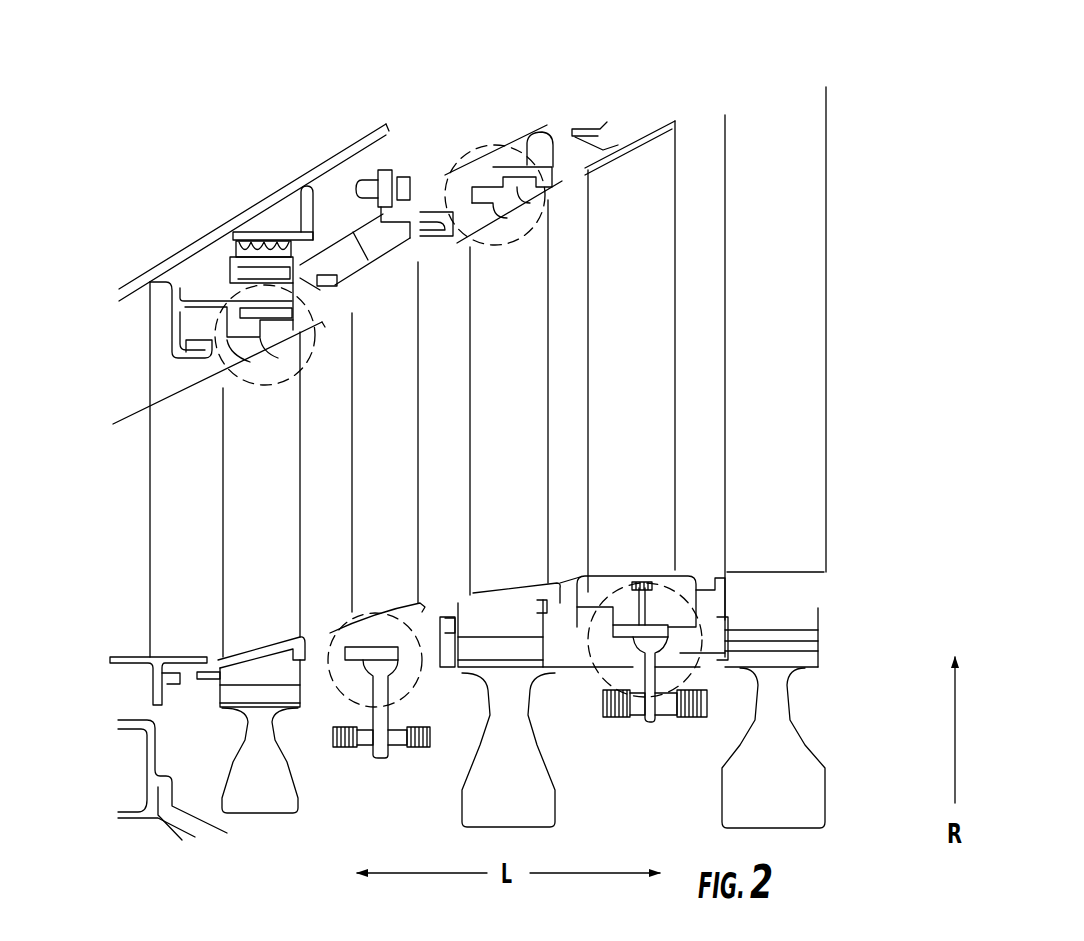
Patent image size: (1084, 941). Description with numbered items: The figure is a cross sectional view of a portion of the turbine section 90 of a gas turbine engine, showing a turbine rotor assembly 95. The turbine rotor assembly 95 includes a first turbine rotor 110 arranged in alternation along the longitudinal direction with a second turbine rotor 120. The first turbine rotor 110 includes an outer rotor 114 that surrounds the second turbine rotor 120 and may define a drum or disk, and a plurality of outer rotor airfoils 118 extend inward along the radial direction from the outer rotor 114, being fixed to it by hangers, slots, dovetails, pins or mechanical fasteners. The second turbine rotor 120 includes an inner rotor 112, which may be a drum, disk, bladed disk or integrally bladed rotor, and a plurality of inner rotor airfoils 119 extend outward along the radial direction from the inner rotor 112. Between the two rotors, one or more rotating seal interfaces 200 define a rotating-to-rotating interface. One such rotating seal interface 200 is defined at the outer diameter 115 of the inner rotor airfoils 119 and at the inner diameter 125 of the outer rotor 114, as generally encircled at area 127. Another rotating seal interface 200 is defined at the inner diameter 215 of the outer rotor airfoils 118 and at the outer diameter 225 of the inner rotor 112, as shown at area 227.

The turbine section 90 is at (620, 49).
The turbine rotor assembly 95 is at (608, 91).
The first turbine rotor 110 is at (498, 116).
The inner rotor 112 is at (562, 675).
The outer rotor 114 is at (202, 298).
The outer diameter of the inner rotor airfoils 115 is at (202, 381).
The outer rotor airfoils 118 is at (393, 463).
The inner rotor airfoils 119 is at (267, 510).
The second turbine rotor 120 is at (853, 491).
The inner diameter of the outer rotor 125 is at (215, 329).
The encircled area 127 is at (296, 290).
The rotating seal interface 200 is at (228, 355).
The inner diameter of the outer rotor airfoils 215 is at (333, 663).
The outer diameter of the inner rotor 225 is at (360, 676).
The area 227 is at (408, 690).